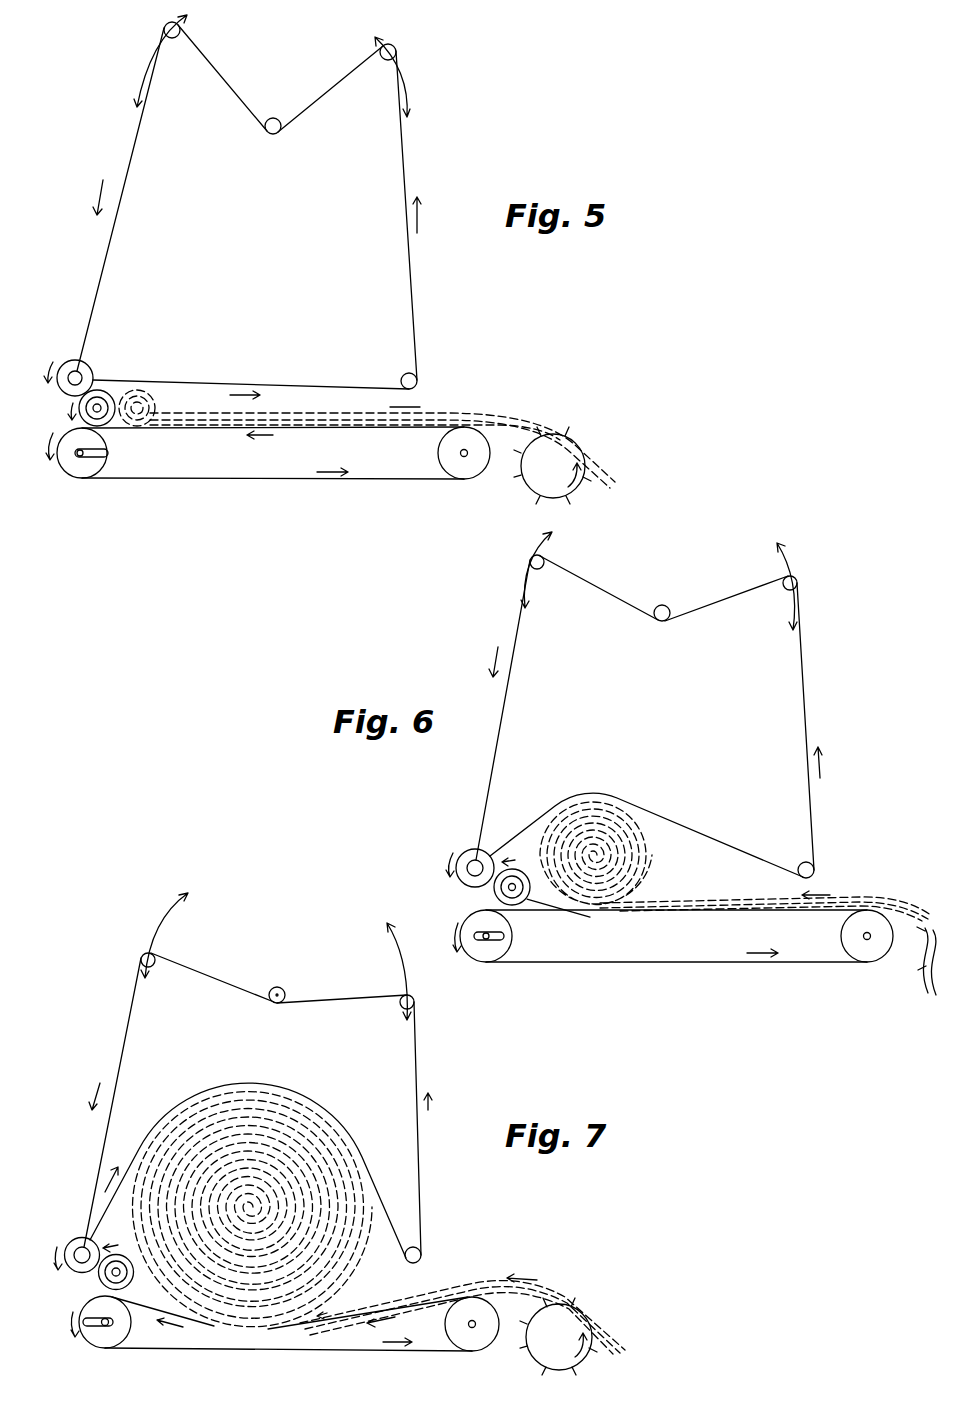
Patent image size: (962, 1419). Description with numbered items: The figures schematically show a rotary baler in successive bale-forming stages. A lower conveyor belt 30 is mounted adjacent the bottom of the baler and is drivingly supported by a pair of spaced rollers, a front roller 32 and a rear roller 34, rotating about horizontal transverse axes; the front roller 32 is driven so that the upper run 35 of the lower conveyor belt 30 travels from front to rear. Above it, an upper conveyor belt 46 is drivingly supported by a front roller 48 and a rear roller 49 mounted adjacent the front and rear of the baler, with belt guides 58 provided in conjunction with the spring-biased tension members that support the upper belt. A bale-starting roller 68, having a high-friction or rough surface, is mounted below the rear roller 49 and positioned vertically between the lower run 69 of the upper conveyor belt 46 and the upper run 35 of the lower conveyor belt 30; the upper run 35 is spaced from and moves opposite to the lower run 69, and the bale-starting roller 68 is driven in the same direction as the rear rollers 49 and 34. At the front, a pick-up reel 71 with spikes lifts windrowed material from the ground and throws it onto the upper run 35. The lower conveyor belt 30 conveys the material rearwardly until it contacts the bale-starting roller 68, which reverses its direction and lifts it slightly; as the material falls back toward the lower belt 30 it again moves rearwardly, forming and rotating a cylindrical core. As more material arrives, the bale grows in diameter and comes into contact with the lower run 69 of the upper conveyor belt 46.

In FIG. 5, the lower conveyor belt 30 is at (262, 480).
In FIG. 6, the lower conveyor belt 30 is at (627, 963).
In FIG. 7, the lower conveyor belt 30 is at (268, 1352).
In FIG. 5, the front roller 32 is at (463, 470).
In FIG. 6, the front roller 32 is at (870, 953).
In FIG. 7, the front roller 32 is at (468, 1340).
In FIG. 5, the rear roller 34 is at (82, 471).
In FIG. 6, the rear roller 34 is at (483, 952).
In FIG. 7, the rear roller 34 is at (103, 1335).
In FIG. 5, the upper run of the lower conveyor belt 35 is at (317, 428).
In FIG. 6, the upper run of the lower conveyor belt 35 is at (698, 915).
In FIG. 7, the upper run of the lower conveyor belt 35 is at (338, 1323).
In FIG. 5, the upper conveyor belt 46 is at (403, 172).
In FIG. 6, the upper conveyor belt 46 is at (805, 670).
In FIG. 7, the upper conveyor belt 46 is at (417, 1057).
In FIG. 5, the front roller of upper conveyor belt 48 is at (413, 378).
In FIG. 6, the front roller of upper conveyor belt 48 is at (813, 867).
In FIG. 7, the front roller of upper conveyor belt 48 is at (418, 1253).
In FIG. 5, the rear roller of upper conveyor belt 49 is at (74, 372).
In FIG. 6, the rear roller of upper conveyor belt 49 is at (473, 860).
In FIG. 7, the rear roller of upper conveyor belt 49 is at (77, 1247).
In FIG. 5, the belt guide 58 is at (272, 118).
In FIG. 6, the belt guide 58 is at (658, 605).
In FIG. 7, the belt guide 58 is at (278, 987).
In FIG. 5, the bale-starting roller 68 is at (80, 400).
In FIG. 6, the bale-starting roller 68 is at (496, 889).
In FIG. 7, the bale-starting roller 68 is at (99, 1282).
In FIG. 5, the lower run of the upper conveyor belt 69 is at (167, 388).
In FIG. 7, the lower run of the upper conveyor belt 69 is at (110, 1208).
In FIG. 5, the pick-up reel 71 is at (575, 488).
In FIG. 6, the pick-up reel 71 is at (922, 976).
In FIG. 7, the pick-up reel 71 is at (582, 1360).